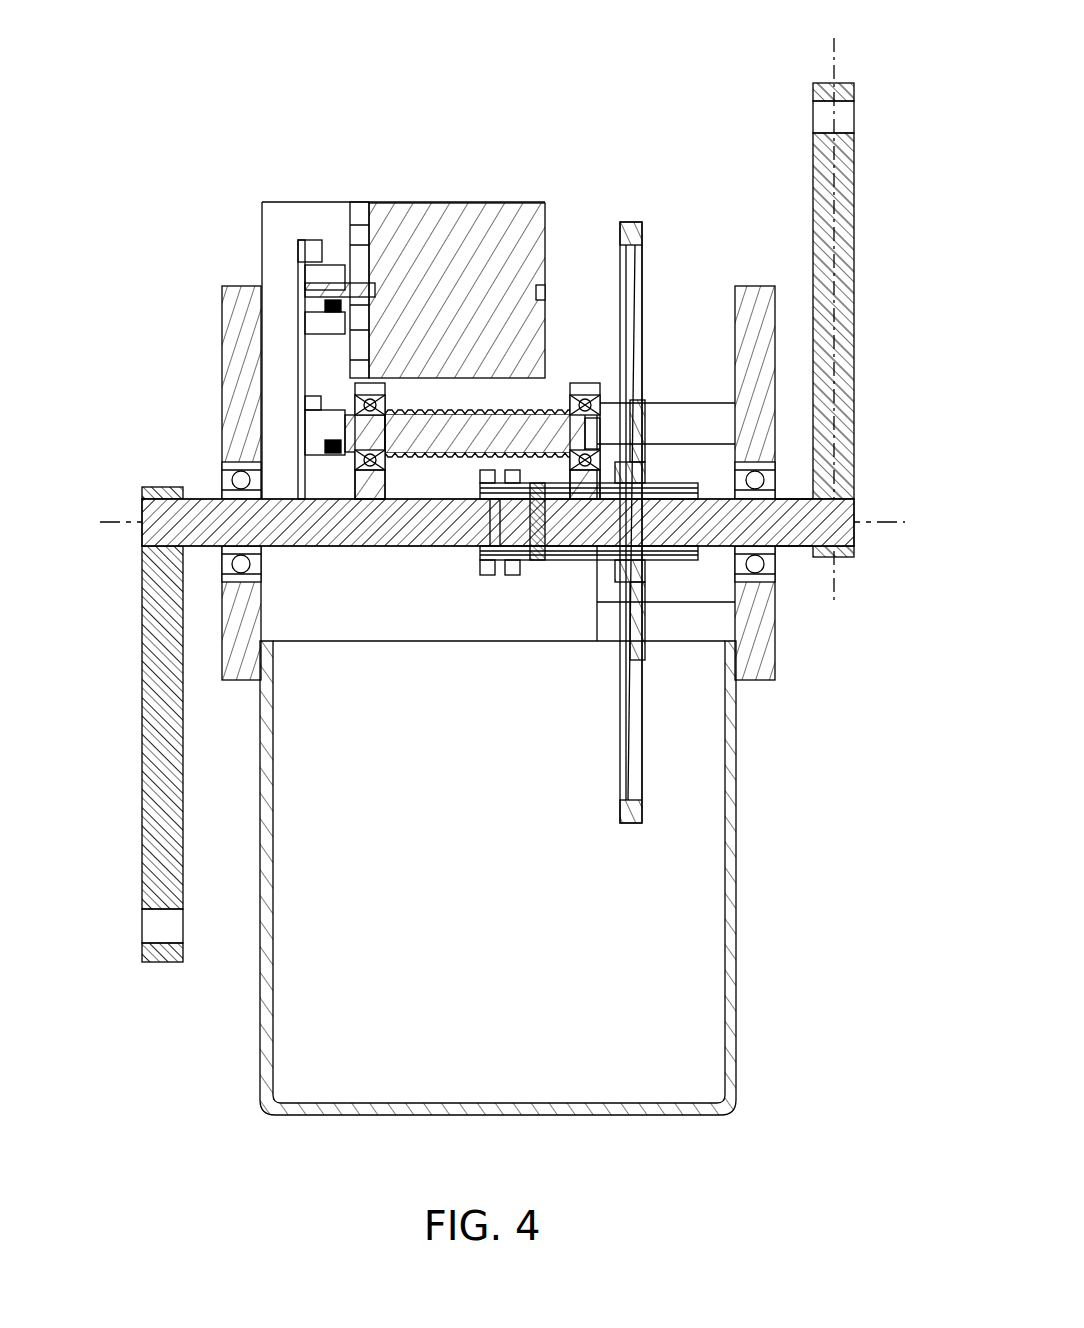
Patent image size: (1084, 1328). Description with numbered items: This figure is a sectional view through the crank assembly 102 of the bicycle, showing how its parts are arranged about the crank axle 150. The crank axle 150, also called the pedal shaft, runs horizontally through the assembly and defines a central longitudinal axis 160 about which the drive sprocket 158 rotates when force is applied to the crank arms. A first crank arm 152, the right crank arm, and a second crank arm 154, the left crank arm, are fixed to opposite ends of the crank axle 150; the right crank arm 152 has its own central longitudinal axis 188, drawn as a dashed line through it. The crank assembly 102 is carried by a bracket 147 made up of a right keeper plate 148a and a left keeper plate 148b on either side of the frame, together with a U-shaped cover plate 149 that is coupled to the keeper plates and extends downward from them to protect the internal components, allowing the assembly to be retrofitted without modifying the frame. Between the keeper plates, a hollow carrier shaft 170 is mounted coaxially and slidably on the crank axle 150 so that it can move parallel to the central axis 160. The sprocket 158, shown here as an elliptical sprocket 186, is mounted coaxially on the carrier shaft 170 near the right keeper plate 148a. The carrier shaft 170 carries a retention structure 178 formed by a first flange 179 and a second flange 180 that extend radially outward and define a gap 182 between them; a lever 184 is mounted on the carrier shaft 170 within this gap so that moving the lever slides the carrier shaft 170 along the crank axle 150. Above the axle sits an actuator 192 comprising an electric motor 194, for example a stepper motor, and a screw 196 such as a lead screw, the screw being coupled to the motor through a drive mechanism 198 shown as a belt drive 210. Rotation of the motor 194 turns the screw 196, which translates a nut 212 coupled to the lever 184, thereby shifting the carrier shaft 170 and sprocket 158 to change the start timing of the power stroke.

The crank assembly 102 is at (204, 251).
The bracket 147 is at (753, 705).
The right keeper plate 148a is at (776, 641).
The left keeper plate 148b is at (222, 648).
The U-shaped cover plate 149 is at (737, 975).
The crank axle 150 is at (203, 498).
The first crank arm 152 is at (845, 228).
The second crank arm 154 is at (142, 820).
The drive sprocket 158 is at (646, 262).
The central longitudinal axis 160 is at (895, 522).
The carrier shaft 170 is at (770, 540).
The retention structure 178 is at (478, 578).
The first flange 179 is at (478, 562).
The second flange 180 is at (575, 568).
The gap 182 is at (492, 583).
The lever 184 is at (645, 478).
The elliptical sprocket 186 is at (614, 264).
The central longitudinal axis of the right crank arm 188 is at (838, 45).
The actuator 192 is at (430, 198).
The electric motor 194 is at (483, 200).
The screw 196 is at (550, 412).
The drive mechanism 198 is at (299, 343).
The belt drive 210 is at (303, 231).
The nut 212 is at (548, 489).